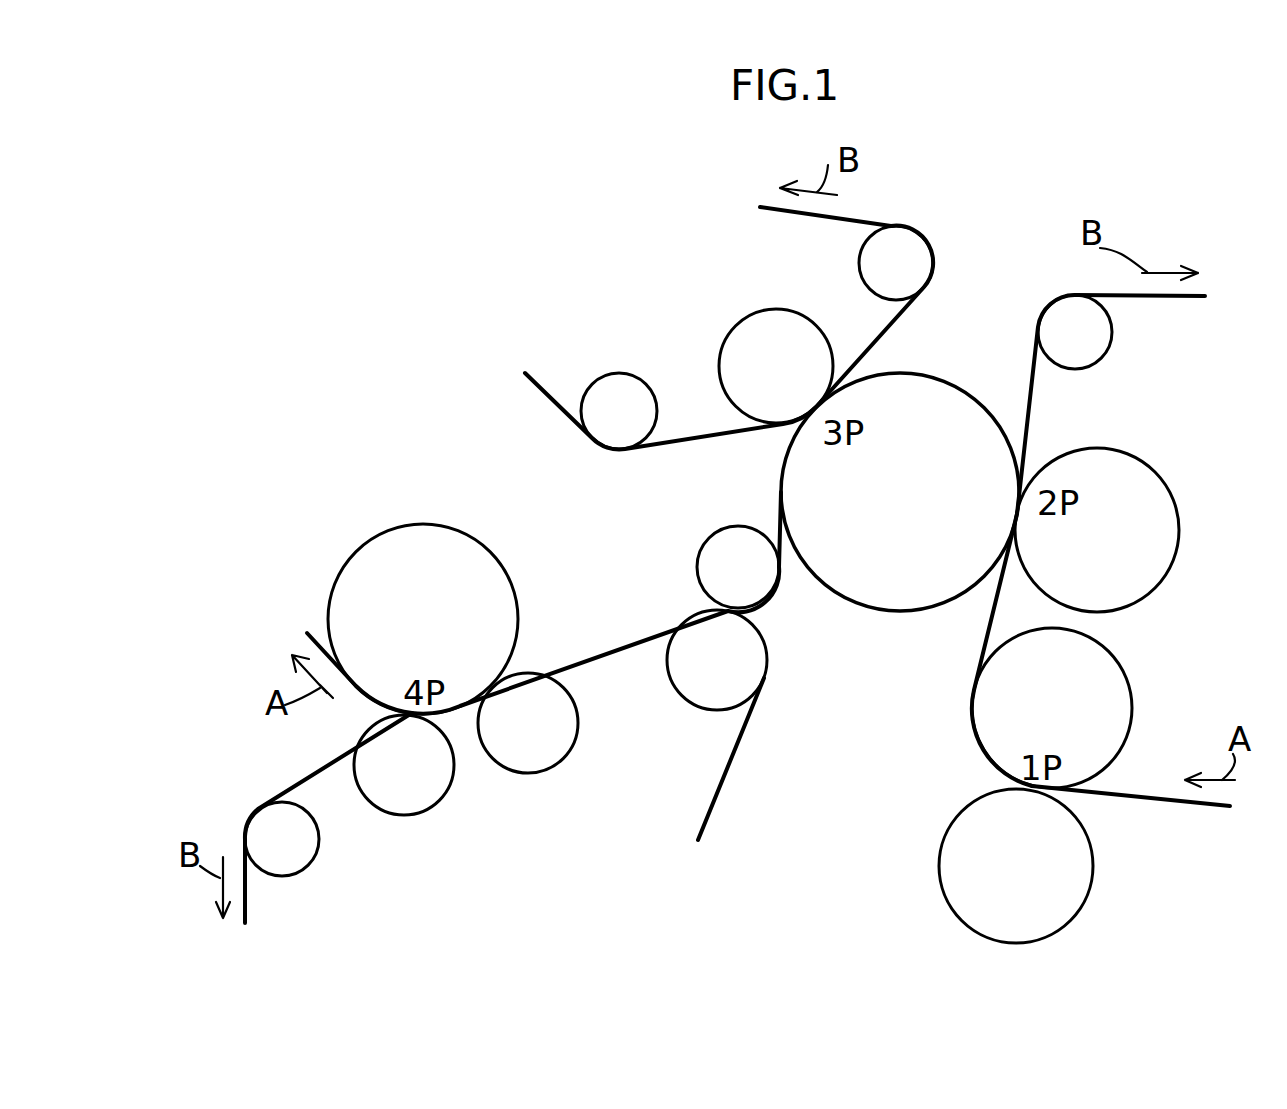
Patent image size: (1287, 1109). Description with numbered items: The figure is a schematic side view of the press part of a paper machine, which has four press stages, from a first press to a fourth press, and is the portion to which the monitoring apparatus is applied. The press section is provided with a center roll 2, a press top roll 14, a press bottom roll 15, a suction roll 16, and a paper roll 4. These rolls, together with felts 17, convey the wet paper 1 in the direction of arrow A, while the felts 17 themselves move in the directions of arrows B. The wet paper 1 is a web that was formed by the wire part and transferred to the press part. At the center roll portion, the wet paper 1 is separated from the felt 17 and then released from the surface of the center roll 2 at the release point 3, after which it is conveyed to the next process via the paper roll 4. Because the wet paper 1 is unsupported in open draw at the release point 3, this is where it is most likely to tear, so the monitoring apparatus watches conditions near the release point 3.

The wet paper 1 is at (1148, 802).
The center roll 2 is at (878, 593).
The release point 3 is at (778, 508).
The paper roll 4 is at (706, 571).
The press top roll 14 is at (745, 350).
The press bottom roll 15 is at (958, 870).
The suction roll 16 is at (690, 688).
The felt 17 is at (890, 328).